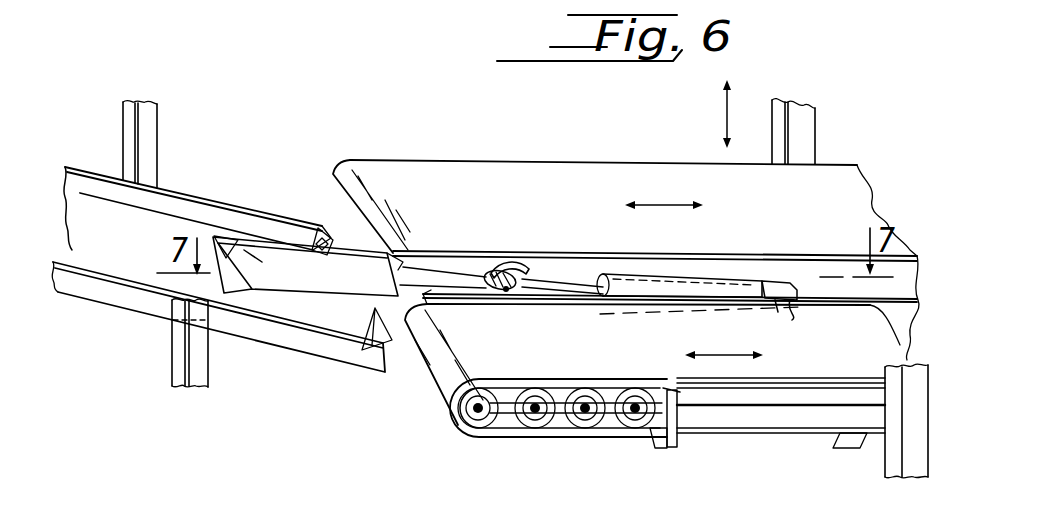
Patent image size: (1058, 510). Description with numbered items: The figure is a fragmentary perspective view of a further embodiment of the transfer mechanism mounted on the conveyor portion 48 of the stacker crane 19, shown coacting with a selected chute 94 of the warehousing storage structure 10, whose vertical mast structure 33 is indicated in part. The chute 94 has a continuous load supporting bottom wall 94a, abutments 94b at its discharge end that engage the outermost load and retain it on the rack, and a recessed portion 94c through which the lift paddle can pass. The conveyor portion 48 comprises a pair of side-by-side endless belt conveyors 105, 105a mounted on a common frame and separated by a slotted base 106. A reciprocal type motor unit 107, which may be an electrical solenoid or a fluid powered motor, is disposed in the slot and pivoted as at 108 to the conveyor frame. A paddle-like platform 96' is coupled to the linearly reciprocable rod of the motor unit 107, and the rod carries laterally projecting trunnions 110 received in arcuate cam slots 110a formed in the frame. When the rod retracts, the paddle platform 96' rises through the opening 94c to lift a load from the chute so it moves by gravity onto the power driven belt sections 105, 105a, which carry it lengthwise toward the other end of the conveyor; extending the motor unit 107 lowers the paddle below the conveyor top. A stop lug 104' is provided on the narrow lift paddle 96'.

The warehousing storage structure 10 is at (182, 150).
The stacker crane 19 is at (856, 130).
The vertical mast structure 33 is at (803, 98).
The conveyor portion 48 is at (476, 146).
The chute 94 is at (200, 190).
The continuous load supporting bottom wall 94a is at (90, 213).
The abutments 94b is at (314, 242).
The recessed portion 94c is at (253, 258).
The paddle-like platform 96' is at (308, 266).
The stop lug 104' is at (269, 199).
The endless belt conveyor 105 is at (577, 184).
The endless belt conveyor 105a is at (648, 344).
The slotted base 106 is at (870, 243).
The reciprocal type motor unit 107 is at (674, 280).
The pivot 108 is at (781, 282).
The laterally projecting trunnions 110 is at (505, 268).
The arcuate cam slots 110a is at (531, 262).